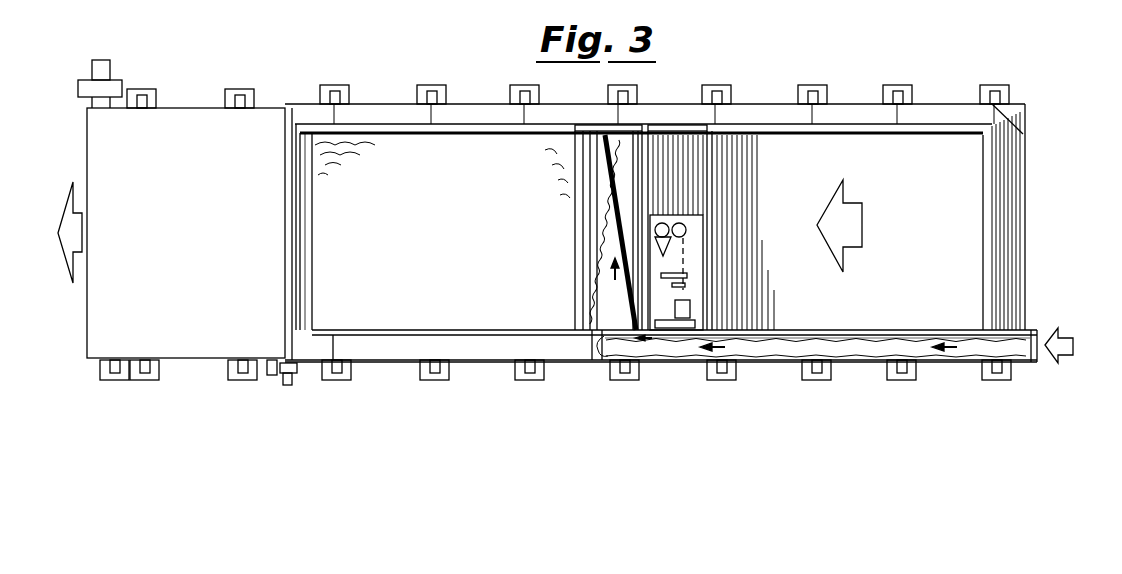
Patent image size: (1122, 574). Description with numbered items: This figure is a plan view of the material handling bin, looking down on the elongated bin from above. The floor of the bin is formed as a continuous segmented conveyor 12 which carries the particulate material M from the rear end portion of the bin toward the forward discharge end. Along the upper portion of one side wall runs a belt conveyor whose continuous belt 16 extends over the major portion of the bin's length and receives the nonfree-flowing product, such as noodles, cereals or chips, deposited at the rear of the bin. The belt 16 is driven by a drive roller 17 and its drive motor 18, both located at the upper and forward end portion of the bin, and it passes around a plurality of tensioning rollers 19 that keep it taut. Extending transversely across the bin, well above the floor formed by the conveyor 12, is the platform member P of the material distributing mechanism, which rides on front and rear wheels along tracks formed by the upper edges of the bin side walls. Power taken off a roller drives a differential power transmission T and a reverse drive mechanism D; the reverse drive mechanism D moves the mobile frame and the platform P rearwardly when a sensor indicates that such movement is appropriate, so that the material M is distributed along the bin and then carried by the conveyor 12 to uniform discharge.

The continuous conveyor 12 is at (898, 243).
The continuous belt 16 is at (897, 337).
The drive roller 17 is at (296, 378).
The drive motor 18 is at (271, 376).
The tensioning rollers 19 is at (1035, 330).
The particulate material M is at (450, 251).
The differential power transmission T is at (655, 231).
The reverse drive mechanism D is at (687, 230).
The platform member P is at (696, 238).